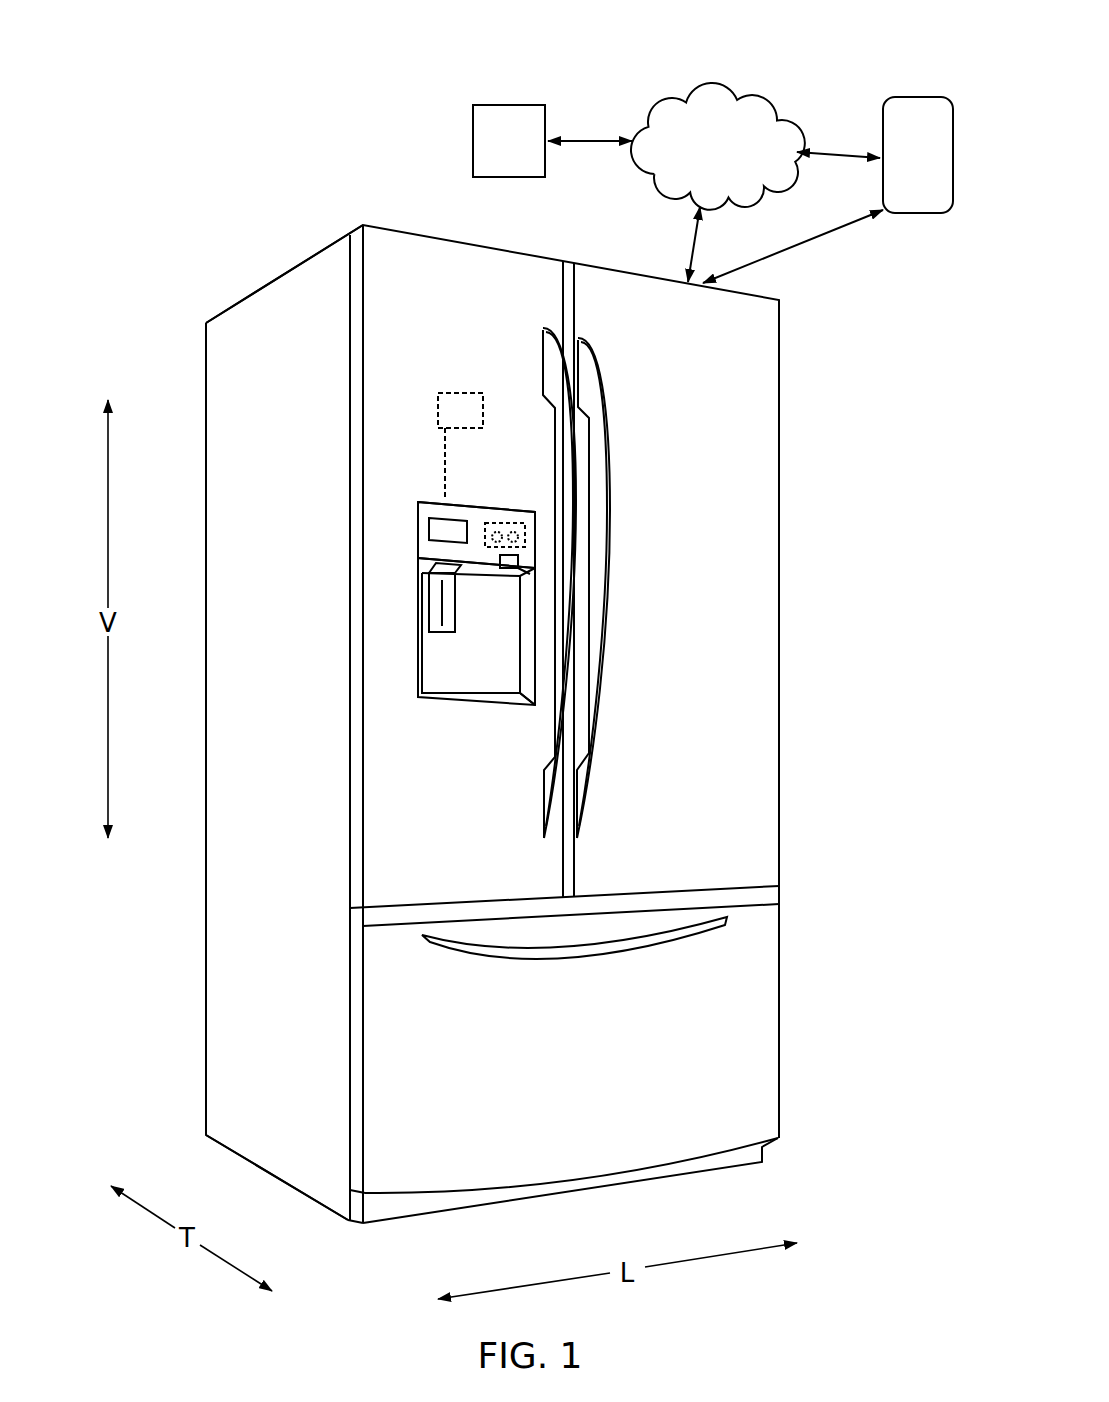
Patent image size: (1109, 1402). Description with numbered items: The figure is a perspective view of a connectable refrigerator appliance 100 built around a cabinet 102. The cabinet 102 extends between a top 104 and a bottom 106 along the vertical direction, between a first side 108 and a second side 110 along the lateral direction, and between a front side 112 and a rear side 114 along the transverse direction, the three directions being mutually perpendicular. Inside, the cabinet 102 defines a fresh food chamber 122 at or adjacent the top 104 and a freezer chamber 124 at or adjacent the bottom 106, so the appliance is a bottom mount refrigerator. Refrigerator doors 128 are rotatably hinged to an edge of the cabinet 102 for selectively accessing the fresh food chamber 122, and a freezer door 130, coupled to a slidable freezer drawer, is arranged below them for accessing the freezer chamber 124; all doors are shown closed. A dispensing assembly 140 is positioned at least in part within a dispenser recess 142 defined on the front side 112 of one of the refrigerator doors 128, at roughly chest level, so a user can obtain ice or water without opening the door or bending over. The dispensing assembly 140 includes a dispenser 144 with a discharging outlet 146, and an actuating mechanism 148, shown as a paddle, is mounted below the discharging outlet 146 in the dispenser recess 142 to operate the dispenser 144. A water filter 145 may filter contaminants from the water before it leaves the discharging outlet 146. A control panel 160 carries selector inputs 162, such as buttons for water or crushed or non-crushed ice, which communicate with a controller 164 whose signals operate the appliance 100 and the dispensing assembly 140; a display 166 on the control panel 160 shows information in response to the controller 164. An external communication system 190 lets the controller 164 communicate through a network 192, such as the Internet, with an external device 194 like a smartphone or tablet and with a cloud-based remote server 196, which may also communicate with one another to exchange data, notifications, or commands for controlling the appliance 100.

The connectable refrigerator appliance 100 is at (225, 126).
The cabinet 102 is at (277, 317).
The top 104 is at (203, 322).
The bottom 106 is at (192, 1132).
The first side 108 is at (362, 1230).
The second side 110 is at (760, 1168).
The front side 112 is at (343, 1227).
The rear side 114 is at (205, 1140).
The fresh food chamber 122 is at (815, 300).
The freezer chamber 124 is at (814, 906).
The refrigerator doors 128 is at (451, 358).
The freezer door 130 is at (583, 1050).
The dispensing assembly 140 is at (428, 470).
The dispenser recess 142 is at (482, 695).
The dispenser 144 is at (422, 628).
The water filter 145 is at (484, 410).
The discharging outlet 146 is at (437, 573).
The actuating mechanism 148 is at (445, 617).
The control panel 160 is at (415, 525).
The selector inputs 162 is at (503, 532).
The controller 164 is at (527, 533).
The display 166 is at (450, 532).
The external communication system 190 is at (817, 78).
The network 192 is at (698, 163).
The external device 194 is at (907, 213).
The remote server 196 is at (492, 156).